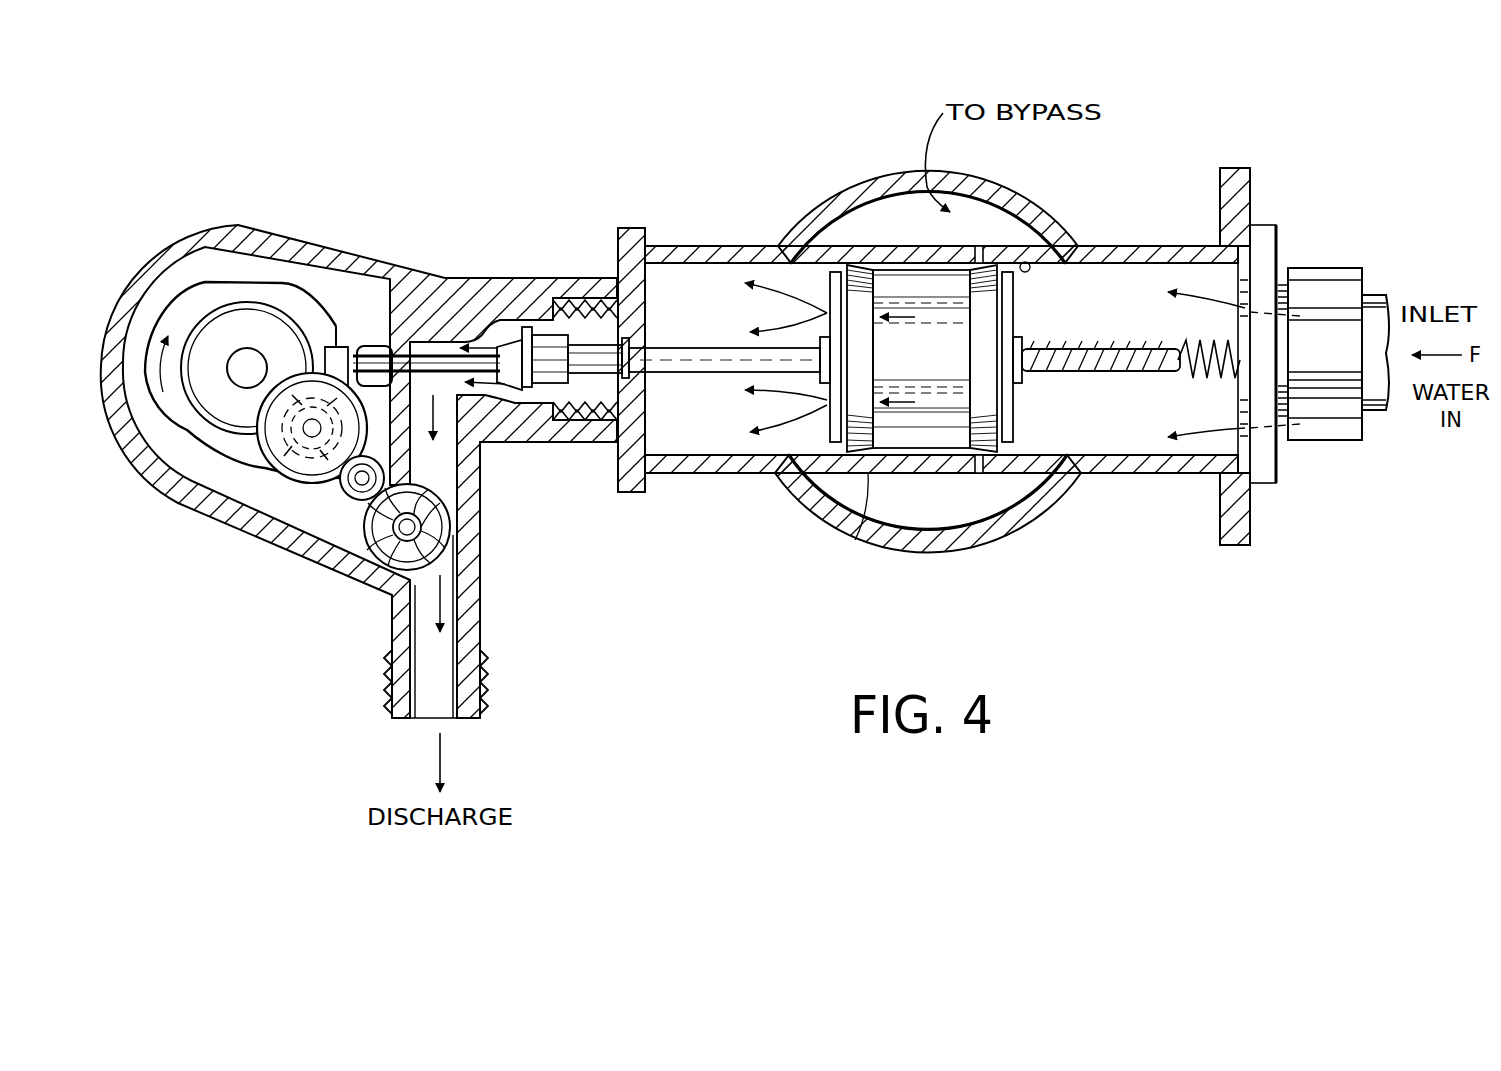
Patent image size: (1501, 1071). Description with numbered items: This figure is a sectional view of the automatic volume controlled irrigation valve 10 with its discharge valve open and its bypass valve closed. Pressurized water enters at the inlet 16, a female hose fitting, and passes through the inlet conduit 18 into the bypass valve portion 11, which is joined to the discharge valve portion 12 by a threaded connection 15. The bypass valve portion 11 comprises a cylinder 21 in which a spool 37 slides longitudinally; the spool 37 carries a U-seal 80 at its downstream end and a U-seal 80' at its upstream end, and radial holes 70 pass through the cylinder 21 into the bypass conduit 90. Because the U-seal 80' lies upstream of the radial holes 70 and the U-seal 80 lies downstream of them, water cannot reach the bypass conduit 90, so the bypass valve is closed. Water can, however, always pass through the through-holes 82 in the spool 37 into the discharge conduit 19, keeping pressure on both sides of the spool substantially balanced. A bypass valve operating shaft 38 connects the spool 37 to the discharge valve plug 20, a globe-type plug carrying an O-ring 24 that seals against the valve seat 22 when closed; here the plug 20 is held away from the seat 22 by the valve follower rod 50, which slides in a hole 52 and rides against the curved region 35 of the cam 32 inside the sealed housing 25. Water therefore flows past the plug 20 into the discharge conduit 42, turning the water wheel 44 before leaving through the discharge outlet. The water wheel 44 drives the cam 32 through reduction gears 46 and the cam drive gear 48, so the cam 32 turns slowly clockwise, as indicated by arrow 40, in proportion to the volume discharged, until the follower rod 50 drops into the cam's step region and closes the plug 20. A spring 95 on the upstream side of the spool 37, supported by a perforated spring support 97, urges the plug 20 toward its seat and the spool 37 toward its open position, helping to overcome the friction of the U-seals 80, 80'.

The automatic volume controlled irrigation valve 10 is at (594, 162).
The bypass valve portion 11 is at (866, 480).
The discharge valve portion 12 is at (597, 262).
The threaded connection 15 is at (592, 437).
The inlet 16 is at (1338, 442).
The inlet conduit 18 is at (1173, 245).
The discharge conduit 19 is at (718, 245).
The discharge valve plug 20 is at (558, 335).
The cylinder 21 is at (1028, 262).
The valve seat 22 is at (493, 312).
The O-ring 24 is at (527, 335).
The housing 25 is at (168, 242).
The cam 32 is at (252, 293).
The curved region 35 is at (205, 280).
The spool 37 is at (337, 330).
The bypass valve operating shaft 38 is at (707, 345).
The arrow 40 is at (123, 430).
The discharge conduit 42 is at (440, 465).
The water wheel 44 is at (348, 573).
The reduction gears / discharge outlet 46 is at (290, 520).
The cam drive gear 48 is at (205, 455).
The valve follower rod 50 is at (443, 363).
The hole 52 is at (372, 355).
The radial holes 70 is at (985, 250).
The U-seal 80 is at (824, 414).
The U-seal 80' is at (1029, 358).
The through-holes 82 is at (920, 312).
The bypass conduit 90 is at (893, 548).
The spring 95 is at (1180, 358).
The spring support 97 is at (1247, 278).